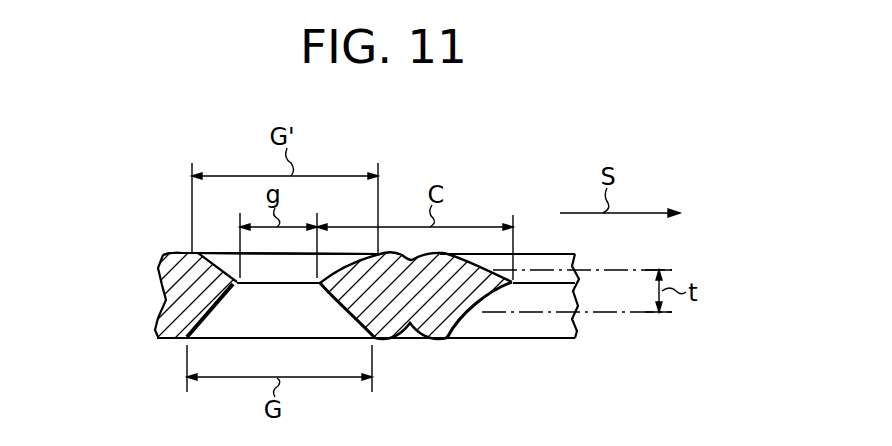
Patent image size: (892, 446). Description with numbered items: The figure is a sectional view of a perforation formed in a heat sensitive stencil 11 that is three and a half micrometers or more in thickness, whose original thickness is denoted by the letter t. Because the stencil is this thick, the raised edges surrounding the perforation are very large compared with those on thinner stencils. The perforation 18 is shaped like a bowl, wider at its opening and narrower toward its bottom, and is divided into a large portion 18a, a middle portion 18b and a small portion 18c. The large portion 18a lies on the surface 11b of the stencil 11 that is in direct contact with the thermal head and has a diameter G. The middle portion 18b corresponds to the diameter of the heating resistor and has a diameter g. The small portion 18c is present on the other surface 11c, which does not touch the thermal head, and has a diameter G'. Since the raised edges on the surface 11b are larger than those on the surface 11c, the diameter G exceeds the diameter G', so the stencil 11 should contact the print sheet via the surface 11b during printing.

The heat sensitive stencil 11 is at (167, 297).
The surface of the stencil 11b is at (449, 344).
The other surface of the stencil 11c is at (168, 252).
The perforation 18 is at (308, 299).
The large portion 18a is at (208, 351).
The middle portion 18b is at (266, 294).
The small portion 18c is at (219, 241).